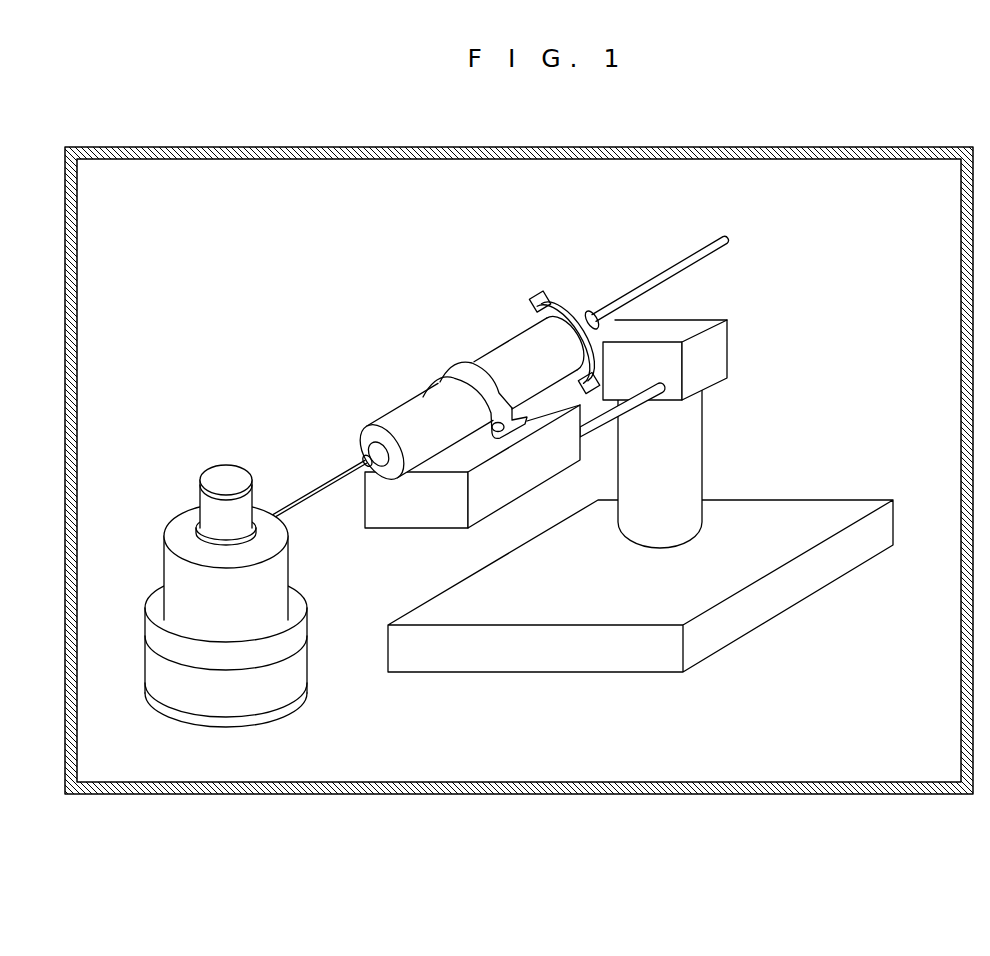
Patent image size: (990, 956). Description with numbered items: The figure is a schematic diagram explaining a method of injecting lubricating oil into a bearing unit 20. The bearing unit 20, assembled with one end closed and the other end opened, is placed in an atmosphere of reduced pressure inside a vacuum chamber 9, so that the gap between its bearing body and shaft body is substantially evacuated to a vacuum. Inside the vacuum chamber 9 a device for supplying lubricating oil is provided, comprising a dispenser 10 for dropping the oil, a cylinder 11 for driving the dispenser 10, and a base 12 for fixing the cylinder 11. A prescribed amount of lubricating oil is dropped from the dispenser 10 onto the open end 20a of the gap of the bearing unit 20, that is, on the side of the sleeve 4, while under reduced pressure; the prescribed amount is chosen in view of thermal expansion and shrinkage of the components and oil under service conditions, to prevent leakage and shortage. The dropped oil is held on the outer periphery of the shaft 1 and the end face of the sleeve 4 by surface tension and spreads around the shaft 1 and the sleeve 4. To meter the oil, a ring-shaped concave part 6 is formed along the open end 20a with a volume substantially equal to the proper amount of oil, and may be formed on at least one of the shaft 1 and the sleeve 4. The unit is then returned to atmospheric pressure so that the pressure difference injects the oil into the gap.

The shaft 1 is at (243, 505).
The sleeve 4 is at (262, 607).
The ring-shaped concave part 6 is at (252, 530).
The vacuum chamber 9 is at (347, 795).
The dispenser 10 is at (518, 347).
The cylinder 11 is at (710, 360).
The base 12 is at (677, 478).
The bearing unit 20 is at (168, 550).
The open end 20a is at (193, 530).